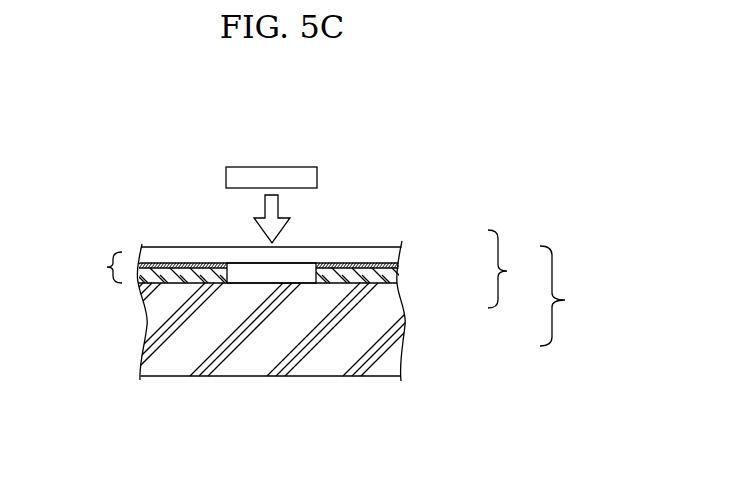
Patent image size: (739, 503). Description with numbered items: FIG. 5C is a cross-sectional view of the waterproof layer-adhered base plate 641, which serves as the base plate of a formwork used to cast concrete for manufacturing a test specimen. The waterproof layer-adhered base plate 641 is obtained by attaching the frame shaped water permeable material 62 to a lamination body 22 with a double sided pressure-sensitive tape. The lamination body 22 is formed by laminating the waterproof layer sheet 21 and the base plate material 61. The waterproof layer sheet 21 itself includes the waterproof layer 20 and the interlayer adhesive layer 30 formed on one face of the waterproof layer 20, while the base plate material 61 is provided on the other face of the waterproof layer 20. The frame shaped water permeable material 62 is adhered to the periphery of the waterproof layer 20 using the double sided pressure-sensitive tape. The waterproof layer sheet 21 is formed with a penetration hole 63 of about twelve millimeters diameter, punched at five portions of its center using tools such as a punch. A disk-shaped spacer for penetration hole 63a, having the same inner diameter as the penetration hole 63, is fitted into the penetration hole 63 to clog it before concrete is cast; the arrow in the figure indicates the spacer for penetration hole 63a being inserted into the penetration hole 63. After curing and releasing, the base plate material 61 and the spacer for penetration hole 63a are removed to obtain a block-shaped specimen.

The spacer for penetration hole 63a is at (271, 178).
The penetration hole 63 is at (297, 273).
The frame shaped water permeable material 62 is at (360, 257).
The interlayer adhesive layer 30 is at (397, 265).
The waterproof layer 20 is at (382, 278).
The waterproof layer sheet 21 is at (516, 269).
The lamination body 22 is at (571, 296).
The base plate material 61 is at (385, 329).
The waterproof layer-adhered base plate 641 is at (86, 267).